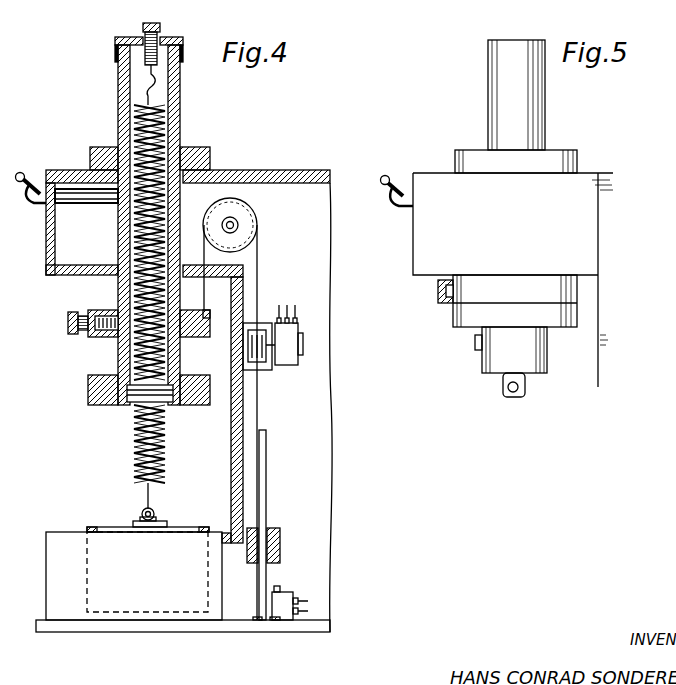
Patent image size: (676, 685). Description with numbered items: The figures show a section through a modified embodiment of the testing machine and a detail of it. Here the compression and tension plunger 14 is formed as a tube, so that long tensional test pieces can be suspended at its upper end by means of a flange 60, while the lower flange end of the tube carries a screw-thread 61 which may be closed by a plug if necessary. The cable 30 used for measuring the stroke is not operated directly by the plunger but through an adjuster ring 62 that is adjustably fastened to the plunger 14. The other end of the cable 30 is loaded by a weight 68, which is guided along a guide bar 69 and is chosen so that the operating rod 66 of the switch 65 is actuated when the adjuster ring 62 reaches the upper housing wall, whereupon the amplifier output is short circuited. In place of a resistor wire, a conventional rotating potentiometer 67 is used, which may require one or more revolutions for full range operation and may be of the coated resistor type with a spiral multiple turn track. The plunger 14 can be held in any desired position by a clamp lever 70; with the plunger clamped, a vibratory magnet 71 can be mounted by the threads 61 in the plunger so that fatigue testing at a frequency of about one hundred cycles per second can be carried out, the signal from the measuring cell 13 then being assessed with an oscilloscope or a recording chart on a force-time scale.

In FIG. 4, the measuring cell 13 is at (107, 527).
In FIG. 4, the compression and tension plunger 14 is at (118, 356).
In FIG. 5, the compression and tension plunger 14 is at (546, 115).
In FIG. 4, the cable 30 is at (259, 272).
In FIG. 4, the flange 60 is at (115, 47).
In FIG. 4, the screw-thread 61 is at (125, 403).
In FIG. 4, the adjuster ring 62 is at (97, 311).
In FIG. 4, the switch 65 is at (308, 601).
In FIG. 4, the operating rod 66 is at (279, 592).
In FIG. 4, the rotating potentiometer 67 is at (287, 360).
In FIG. 4, the weight 68 is at (281, 542).
In FIG. 4, the guide bar 69 is at (267, 450).
In FIG. 4, the clamp lever 70 is at (30, 176).
In FIG. 5, the clamp lever 70 is at (392, 193).
In FIG. 5, the vibratory magnet 71 is at (492, 366).